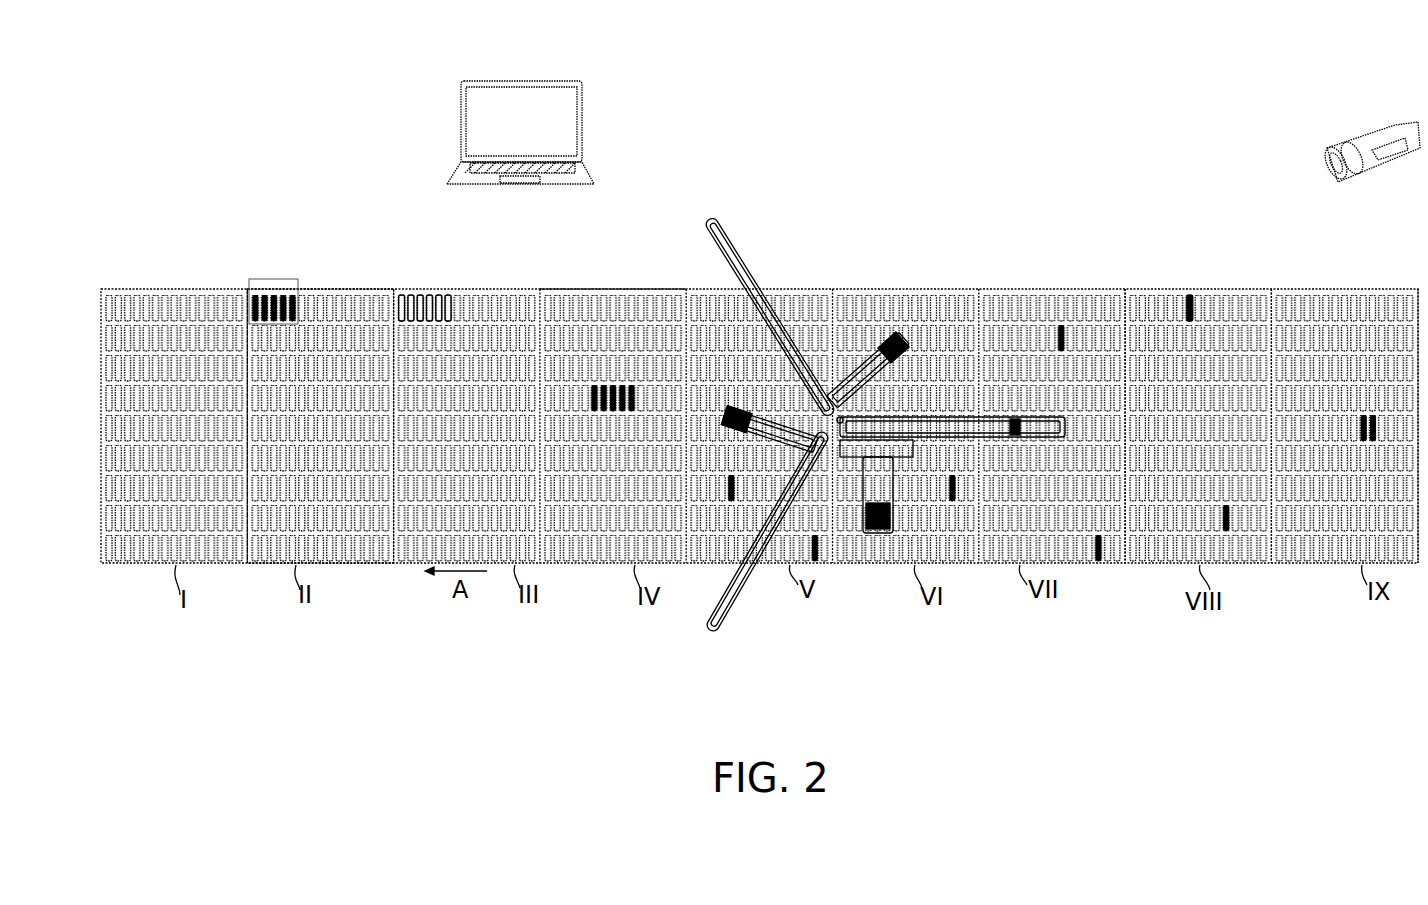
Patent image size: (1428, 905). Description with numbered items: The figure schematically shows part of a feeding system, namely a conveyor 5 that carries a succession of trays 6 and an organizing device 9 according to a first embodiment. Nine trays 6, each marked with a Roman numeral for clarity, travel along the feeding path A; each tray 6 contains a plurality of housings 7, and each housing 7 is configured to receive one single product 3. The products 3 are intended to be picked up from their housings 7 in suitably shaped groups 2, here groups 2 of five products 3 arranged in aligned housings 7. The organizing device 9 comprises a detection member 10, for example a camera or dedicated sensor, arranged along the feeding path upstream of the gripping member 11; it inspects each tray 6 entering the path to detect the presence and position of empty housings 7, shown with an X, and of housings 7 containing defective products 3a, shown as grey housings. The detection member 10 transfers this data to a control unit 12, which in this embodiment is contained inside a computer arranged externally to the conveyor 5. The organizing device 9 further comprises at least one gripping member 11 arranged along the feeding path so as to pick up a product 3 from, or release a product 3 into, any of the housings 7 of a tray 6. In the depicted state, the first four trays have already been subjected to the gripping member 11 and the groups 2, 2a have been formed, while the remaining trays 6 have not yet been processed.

The group of products 2 is at (352, 565).
The group of products 2a is at (272, 279).
The product 3 is at (447, 295).
The defective product 3a is at (1189, 292).
The conveyor 5 is at (117, 291).
The tray 6 is at (1097, 565).
The housing 7 is at (594, 292).
The organizing device 9 is at (832, 255).
The detection member 10 is at (1380, 136).
The gripping member 11 is at (840, 568).
The control unit 12 is at (583, 165).